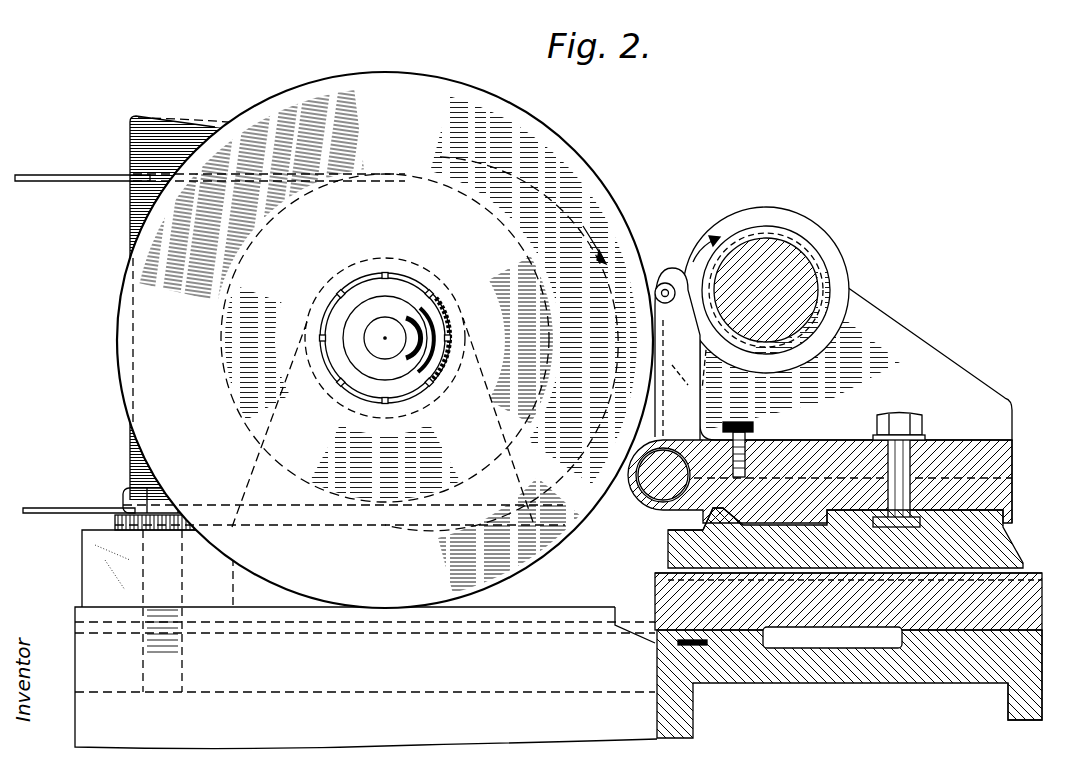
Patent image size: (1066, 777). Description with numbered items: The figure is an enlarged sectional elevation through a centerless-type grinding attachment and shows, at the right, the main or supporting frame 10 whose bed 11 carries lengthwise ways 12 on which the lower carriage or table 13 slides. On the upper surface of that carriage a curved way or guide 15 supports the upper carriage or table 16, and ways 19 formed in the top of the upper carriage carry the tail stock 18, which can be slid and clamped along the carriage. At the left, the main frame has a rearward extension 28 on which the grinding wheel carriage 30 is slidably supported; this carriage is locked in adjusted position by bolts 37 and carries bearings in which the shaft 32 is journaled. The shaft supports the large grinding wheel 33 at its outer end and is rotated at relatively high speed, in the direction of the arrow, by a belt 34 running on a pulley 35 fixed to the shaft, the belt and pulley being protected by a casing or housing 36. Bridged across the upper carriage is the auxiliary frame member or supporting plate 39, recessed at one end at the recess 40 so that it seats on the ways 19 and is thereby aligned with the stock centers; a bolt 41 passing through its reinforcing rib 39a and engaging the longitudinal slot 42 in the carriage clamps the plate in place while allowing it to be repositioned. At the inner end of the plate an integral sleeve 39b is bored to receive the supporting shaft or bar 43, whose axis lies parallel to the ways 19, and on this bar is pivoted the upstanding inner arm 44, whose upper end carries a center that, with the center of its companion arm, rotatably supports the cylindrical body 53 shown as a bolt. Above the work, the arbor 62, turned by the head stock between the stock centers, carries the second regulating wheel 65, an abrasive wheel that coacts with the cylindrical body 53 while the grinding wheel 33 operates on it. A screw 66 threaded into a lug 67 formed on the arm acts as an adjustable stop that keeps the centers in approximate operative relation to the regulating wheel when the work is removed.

The main or supporting frame 10 is at (1025, 660).
The bed 11 is at (840, 665).
The ways 12 is at (695, 646).
The lower carriage or table 13 is at (677, 604).
The curved way or guide 15 is at (670, 575).
The upper carriage or table 16 is at (693, 547).
The tail stock 18 is at (905, 342).
The ways 19 is at (672, 534).
The rearward extension 28 is at (366, 678).
The carriage 30 is at (95, 563).
The shaft 32 is at (383, 338).
The grinding wheel 33 is at (567, 157).
The belt 34 is at (70, 176).
The pulley 35 is at (220, 368).
The casing or housing 36 is at (158, 128).
The bolts 37 is at (123, 493).
The auxiliary frame member or supporting plate 39 is at (1005, 488).
The reinforcing rib 39a is at (983, 455).
The sleeve 39b is at (636, 487).
The recess 40 is at (668, 520).
The bolt 41 is at (905, 418).
The slot 42 is at (893, 530).
The supporting shaft or bar 43 is at (640, 470).
The inner arm 44 is at (685, 403).
The cylindrical body (bolt) 53 is at (660, 283).
The arbor 62 is at (805, 268).
The second regulating wheel 65 is at (796, 220).
The screw 66 is at (753, 428).
The lug 67 is at (745, 425).